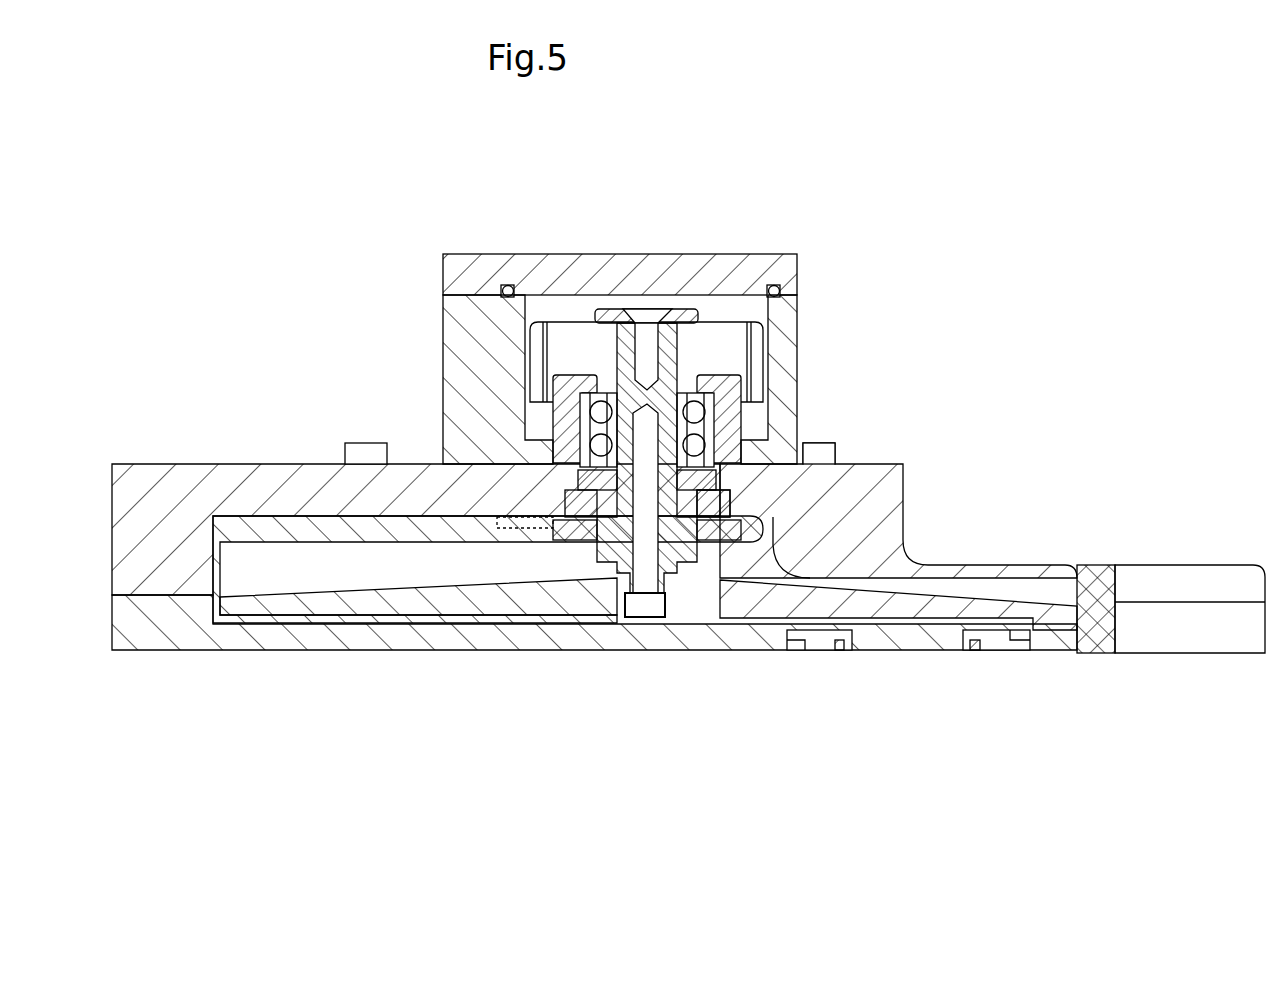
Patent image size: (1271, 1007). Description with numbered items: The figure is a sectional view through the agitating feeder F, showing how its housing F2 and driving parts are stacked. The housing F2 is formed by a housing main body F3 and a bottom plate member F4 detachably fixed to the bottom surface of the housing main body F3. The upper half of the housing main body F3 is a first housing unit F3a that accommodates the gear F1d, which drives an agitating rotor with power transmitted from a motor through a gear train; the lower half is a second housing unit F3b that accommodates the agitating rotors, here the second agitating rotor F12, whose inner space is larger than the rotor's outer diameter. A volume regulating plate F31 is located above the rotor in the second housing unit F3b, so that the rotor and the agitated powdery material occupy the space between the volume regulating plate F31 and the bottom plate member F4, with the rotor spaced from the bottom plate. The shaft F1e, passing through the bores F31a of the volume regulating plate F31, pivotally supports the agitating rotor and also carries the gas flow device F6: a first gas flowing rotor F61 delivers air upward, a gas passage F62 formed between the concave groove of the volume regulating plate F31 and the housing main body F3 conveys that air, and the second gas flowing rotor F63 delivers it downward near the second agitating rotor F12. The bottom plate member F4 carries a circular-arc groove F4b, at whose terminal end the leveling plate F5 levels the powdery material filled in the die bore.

The agitating feeder F is at (266, 153).
The gas flow device F6 is at (538, 498).
The gear F1d is at (735, 340).
The gas passage F62 is at (527, 517).
The first housing unit F3a is at (785, 352).
The housing main body F3 is at (598, 462).
The housing F2 is at (688, 474).
The bores F31a is at (573, 540).
The second gas flowing rotor F63 is at (722, 512).
The first gas flowing rotor F61 is at (815, 457).
The second housing unit F3b is at (960, 570).
The bottom plate member F4 is at (1117, 637).
The volume regulating plate F31 is at (317, 530).
The second agitating rotor F12 is at (472, 607).
The shaft F1e is at (603, 582).
The groove F4b is at (797, 653).
The leveling plate F5 is at (820, 650).